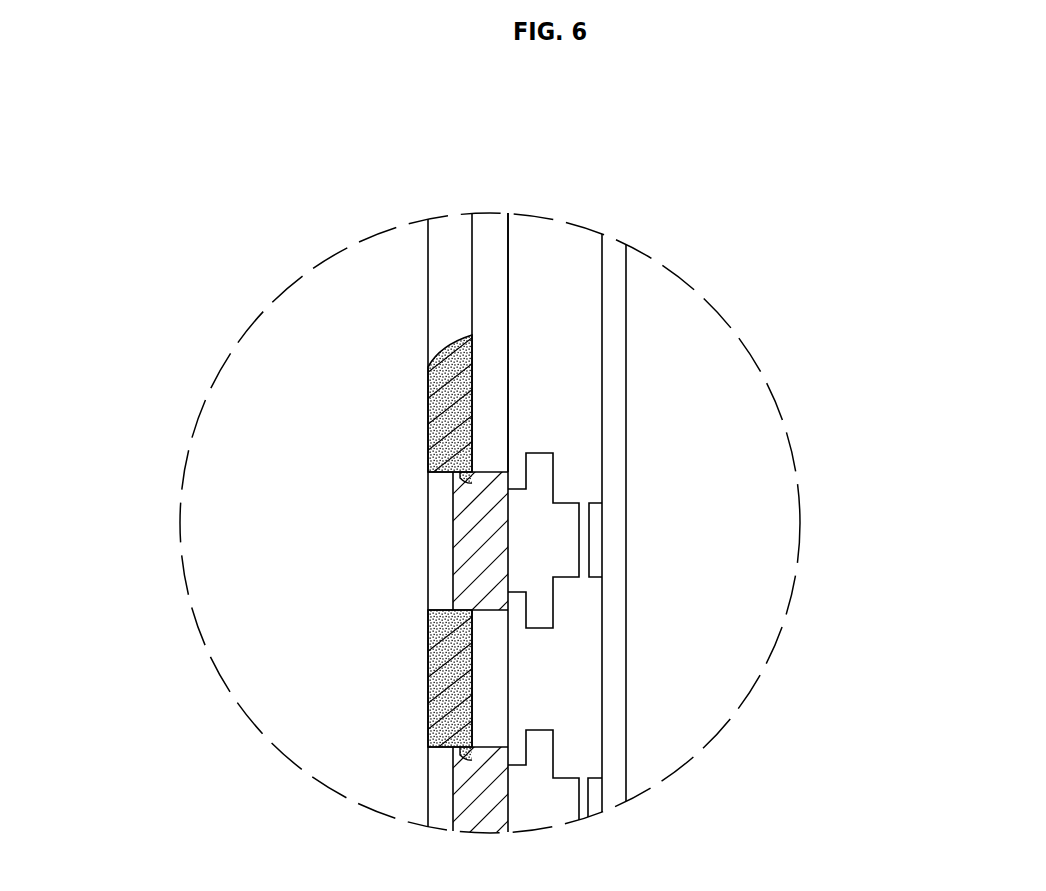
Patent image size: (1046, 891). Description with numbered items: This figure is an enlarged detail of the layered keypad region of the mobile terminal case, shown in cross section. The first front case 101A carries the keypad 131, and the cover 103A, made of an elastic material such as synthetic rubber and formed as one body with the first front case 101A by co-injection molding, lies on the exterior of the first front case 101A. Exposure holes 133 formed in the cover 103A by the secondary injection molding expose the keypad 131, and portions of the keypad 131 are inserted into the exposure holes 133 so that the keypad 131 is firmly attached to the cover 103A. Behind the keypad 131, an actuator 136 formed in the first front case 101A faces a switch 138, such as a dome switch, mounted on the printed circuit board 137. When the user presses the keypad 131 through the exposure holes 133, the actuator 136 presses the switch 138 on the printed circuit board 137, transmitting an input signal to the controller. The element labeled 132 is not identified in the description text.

The first front case 101A is at (488, 365).
The cover 103A is at (450, 393).
The keypad 131 is at (462, 530).
The insulating member 132 is at (493, 685).
The exposure holes 133 is at (442, 568).
The actuator 136 is at (540, 482).
The printed circuit board 137 is at (608, 647).
The switch 138 is at (593, 542).